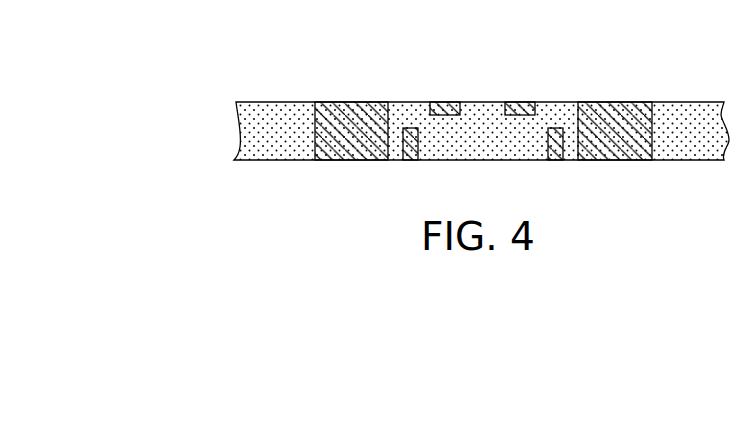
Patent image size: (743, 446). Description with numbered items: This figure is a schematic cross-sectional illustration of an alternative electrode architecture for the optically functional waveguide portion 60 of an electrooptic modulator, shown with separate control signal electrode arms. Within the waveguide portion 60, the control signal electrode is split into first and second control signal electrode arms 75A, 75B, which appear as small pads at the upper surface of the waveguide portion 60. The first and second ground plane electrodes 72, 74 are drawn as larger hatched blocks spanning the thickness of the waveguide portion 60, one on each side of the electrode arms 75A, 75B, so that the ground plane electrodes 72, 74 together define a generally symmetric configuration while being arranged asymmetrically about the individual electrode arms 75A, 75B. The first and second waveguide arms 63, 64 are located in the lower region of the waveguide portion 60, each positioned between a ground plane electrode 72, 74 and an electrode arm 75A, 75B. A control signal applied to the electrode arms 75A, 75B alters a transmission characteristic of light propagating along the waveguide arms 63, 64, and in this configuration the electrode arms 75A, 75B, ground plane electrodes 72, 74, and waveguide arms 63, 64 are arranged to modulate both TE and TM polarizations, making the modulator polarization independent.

The optically functional waveguide portion 60 is at (229, 129).
The first ground plane electrode 72 is at (354, 102).
The second ground plane electrode 74 is at (614, 102).
The first control signal electrode arm 75A is at (453, 116).
The second control signal electrode arm 75B is at (518, 102).
The first waveguide arm 63 is at (409, 160).
The second waveguide arm 64 is at (554, 160).